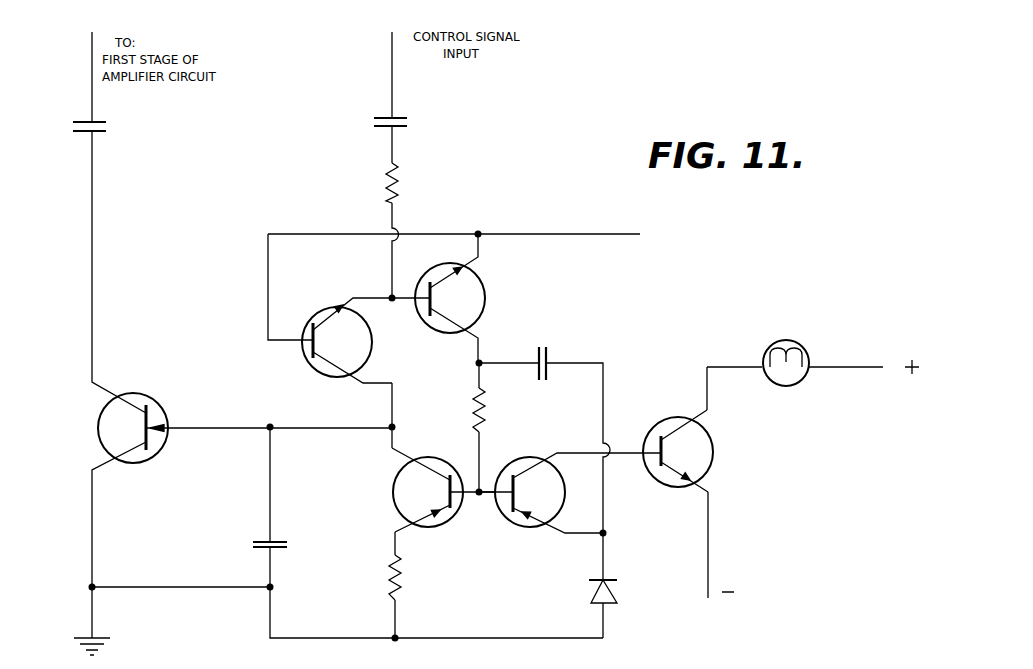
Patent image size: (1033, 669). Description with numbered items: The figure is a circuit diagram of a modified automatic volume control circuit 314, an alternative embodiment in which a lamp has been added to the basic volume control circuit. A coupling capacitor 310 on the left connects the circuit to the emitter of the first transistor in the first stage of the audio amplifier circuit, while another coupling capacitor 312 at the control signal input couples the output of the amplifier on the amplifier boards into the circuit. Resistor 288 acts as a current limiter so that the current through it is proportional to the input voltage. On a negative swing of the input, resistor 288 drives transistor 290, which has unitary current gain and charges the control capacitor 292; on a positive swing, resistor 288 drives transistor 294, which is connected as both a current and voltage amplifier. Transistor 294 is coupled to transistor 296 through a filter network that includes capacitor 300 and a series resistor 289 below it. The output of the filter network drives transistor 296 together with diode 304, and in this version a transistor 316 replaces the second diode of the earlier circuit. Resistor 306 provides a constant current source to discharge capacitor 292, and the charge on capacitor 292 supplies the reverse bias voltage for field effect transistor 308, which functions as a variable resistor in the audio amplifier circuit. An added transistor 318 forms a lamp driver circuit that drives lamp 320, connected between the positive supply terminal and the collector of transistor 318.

The coupling capacitor 310 is at (96, 131).
The coupling capacitor 312 is at (400, 118).
The resistor 288 is at (398, 185).
The circuit 314 is at (553, 125).
The transistor 290 is at (344, 317).
The transistor 294 is at (485, 290).
The capacitor 300 is at (548, 362).
The resistor 289 is at (484, 415).
The field effect transistor 308 is at (98, 440).
The transistor 296 is at (393, 487).
The control capacitor 292 is at (274, 540).
The transistor 316 is at (516, 524).
The transistor 318 is at (672, 419).
The lamp 320 is at (808, 350).
The resistor 306 is at (398, 600).
The diode 304 is at (606, 604).